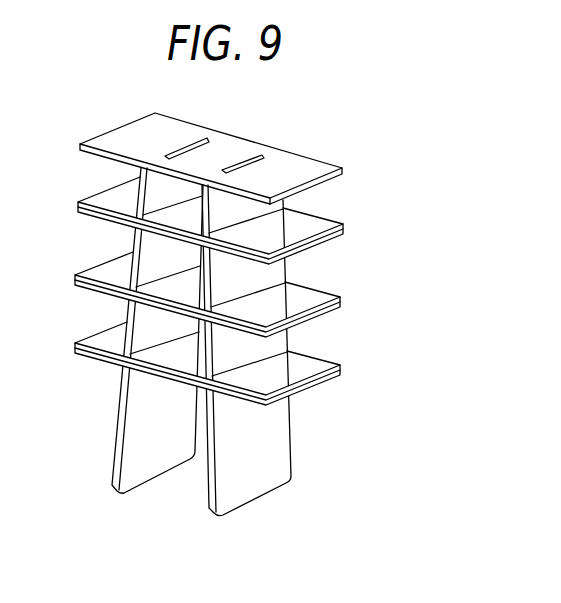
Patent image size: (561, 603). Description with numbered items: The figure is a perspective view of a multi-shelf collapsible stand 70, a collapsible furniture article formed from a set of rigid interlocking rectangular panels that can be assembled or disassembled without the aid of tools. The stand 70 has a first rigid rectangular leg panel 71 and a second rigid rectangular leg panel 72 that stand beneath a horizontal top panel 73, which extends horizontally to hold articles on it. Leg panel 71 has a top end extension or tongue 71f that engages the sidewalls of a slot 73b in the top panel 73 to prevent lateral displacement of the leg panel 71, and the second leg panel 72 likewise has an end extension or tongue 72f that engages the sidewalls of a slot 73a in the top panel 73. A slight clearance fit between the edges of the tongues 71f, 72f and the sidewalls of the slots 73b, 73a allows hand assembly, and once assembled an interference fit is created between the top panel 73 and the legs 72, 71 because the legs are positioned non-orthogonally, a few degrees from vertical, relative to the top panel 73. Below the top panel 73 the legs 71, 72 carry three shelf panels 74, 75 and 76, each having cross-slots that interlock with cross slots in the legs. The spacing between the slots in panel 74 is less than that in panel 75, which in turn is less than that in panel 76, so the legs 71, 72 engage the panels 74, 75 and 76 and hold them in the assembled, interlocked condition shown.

The multi-shelf collapsible stand 70 is at (290, 125).
The first leg panel 71 is at (265, 450).
The tongue of first leg panel 71f is at (242, 160).
The second leg panel 72 is at (130, 447).
The tongue of second leg panel 72f is at (187, 141).
The top panel 73 is at (318, 163).
The slot in top panel 73a is at (127, 170).
The slot in top panel 73b is at (297, 145).
The shelf panel 74 is at (318, 225).
The shelf panel 75 is at (318, 290).
The shelf panel 76 is at (315, 362).